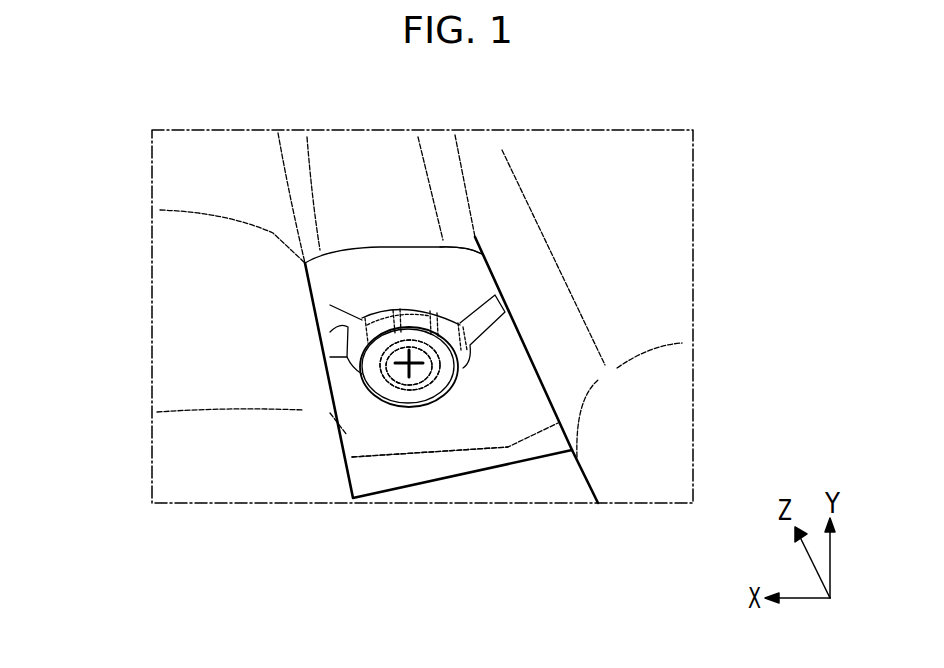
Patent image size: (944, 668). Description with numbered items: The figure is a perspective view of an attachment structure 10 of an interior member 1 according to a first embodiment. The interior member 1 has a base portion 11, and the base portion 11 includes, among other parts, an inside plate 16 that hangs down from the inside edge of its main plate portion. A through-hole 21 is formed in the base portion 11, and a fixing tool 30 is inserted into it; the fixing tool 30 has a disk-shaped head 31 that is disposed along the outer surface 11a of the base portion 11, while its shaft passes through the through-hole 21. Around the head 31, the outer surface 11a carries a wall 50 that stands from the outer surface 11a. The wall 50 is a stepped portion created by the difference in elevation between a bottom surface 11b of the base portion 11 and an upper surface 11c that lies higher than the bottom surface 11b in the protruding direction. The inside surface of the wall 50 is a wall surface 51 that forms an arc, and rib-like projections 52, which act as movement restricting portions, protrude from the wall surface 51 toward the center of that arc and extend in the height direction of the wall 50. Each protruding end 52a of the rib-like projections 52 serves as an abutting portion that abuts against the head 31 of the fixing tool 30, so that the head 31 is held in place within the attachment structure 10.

The interior member 1 is at (670, 284).
The attachment structure 10 is at (495, 256).
The base portion 11 is at (487, 437).
The inside plate 16 is at (550, 547).
The outer surface 11a is at (347, 410).
The bottom surface 11b is at (443, 440).
The upper surface 11c is at (465, 290).
The through-hole 21 is at (380, 378).
The fixing tool 30 is at (395, 407).
The head 31 is at (374, 553).
The wall 50 is at (378, 318).
The wall surface 51 is at (350, 350).
The rib-like projection 52 is at (432, 320).
The protruding end 52a is at (127, 278).